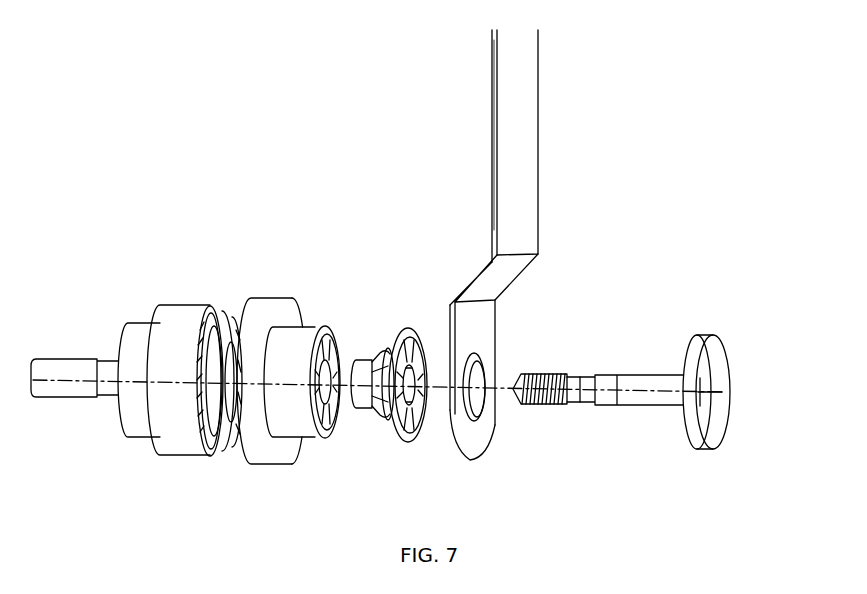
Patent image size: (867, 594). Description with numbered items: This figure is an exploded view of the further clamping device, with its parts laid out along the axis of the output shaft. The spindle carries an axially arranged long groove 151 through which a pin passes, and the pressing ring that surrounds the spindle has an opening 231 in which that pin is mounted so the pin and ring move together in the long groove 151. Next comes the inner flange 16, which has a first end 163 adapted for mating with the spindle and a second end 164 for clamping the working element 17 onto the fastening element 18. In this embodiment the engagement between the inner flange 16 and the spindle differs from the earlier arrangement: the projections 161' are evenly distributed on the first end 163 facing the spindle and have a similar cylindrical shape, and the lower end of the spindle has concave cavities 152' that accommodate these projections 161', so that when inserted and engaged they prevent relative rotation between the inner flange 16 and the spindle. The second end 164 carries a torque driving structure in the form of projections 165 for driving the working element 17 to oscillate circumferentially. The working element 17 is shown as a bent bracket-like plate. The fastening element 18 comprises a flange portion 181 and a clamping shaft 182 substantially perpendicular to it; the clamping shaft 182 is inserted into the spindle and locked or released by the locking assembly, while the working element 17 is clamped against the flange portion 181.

The inner flange 16 is at (387, 350).
The working element 17 is at (512, 203).
The fastening element 18 is at (599, 343).
The long groove 151 is at (226, 318).
The concave cavities 152' is at (300, 400).
The projections 161' is at (367, 414).
The first end 163 is at (385, 345).
The second end 164 is at (418, 320).
The projections 165 is at (407, 432).
The flange portion 181 is at (711, 373).
The clamping shaft 182 is at (617, 372).
The opening 231 is at (197, 345).